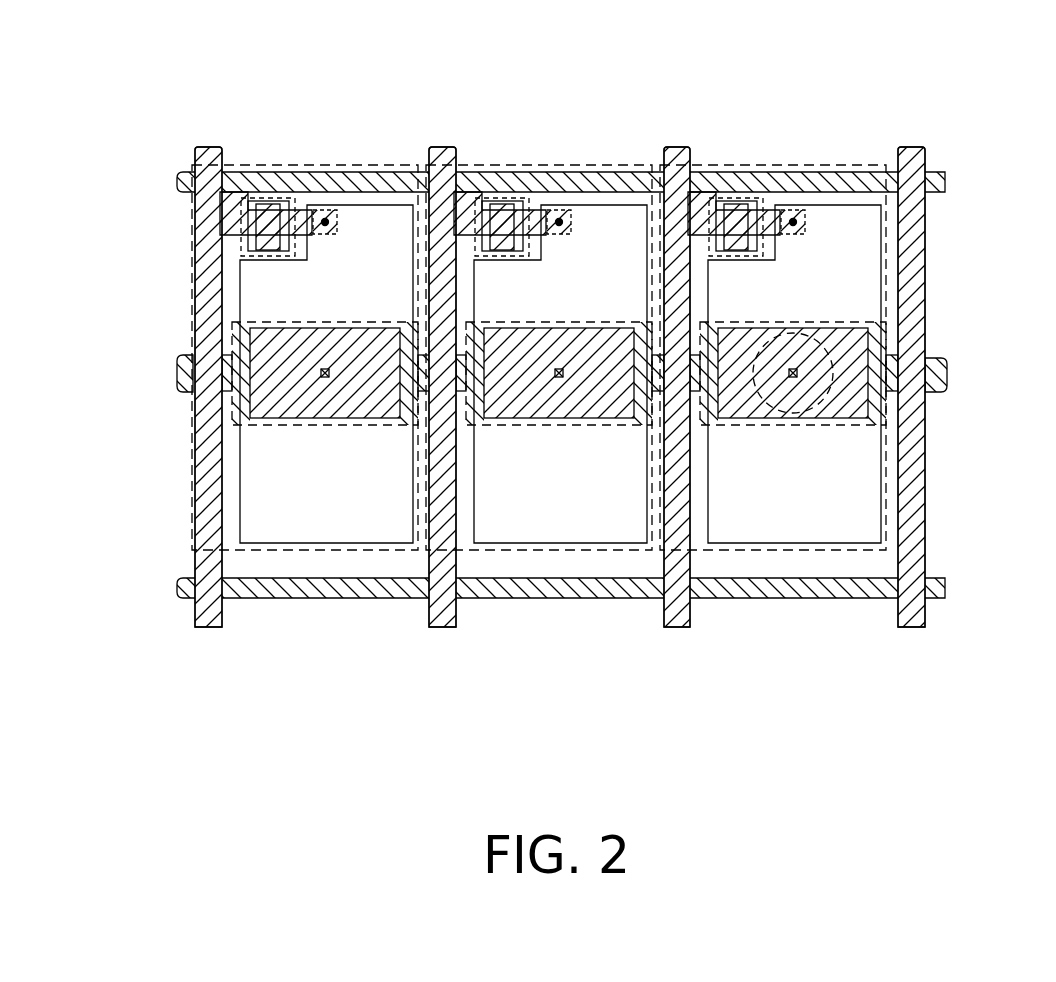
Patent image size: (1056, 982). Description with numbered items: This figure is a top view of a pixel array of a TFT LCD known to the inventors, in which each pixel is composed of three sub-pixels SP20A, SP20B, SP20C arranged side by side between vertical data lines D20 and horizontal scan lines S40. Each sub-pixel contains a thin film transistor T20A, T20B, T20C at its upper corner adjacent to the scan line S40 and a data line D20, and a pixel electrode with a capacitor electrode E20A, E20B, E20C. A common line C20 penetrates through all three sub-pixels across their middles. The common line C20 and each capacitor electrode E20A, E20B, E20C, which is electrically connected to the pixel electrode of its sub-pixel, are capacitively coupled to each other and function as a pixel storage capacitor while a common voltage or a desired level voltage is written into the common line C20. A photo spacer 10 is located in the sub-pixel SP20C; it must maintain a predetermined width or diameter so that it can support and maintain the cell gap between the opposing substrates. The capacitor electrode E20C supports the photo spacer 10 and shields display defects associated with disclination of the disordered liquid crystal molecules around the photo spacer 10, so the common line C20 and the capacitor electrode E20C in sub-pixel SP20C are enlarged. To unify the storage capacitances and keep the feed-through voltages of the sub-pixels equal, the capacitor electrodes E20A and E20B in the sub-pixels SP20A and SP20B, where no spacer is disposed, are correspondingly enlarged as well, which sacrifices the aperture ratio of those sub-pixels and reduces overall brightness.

The sub-pixel SP20A is at (327, 160).
The sub-pixel SP20B is at (539, 292).
The sub-pixel SP20C is at (773, 292).
The thin film transistor T20A is at (270, 165).
The thin film transistor T20B is at (512, 173).
The thin film transistor T20C is at (746, 173).
The capacitor electrode E20A is at (280, 428).
The capacitor electrode E20B is at (559, 416).
The capacitor electrode E20C is at (793, 416).
The scan line S40 is at (945, 181).
The common line C20 is at (178, 367).
The data line D20 is at (677, 630).
The photo spacer 10 is at (804, 337).